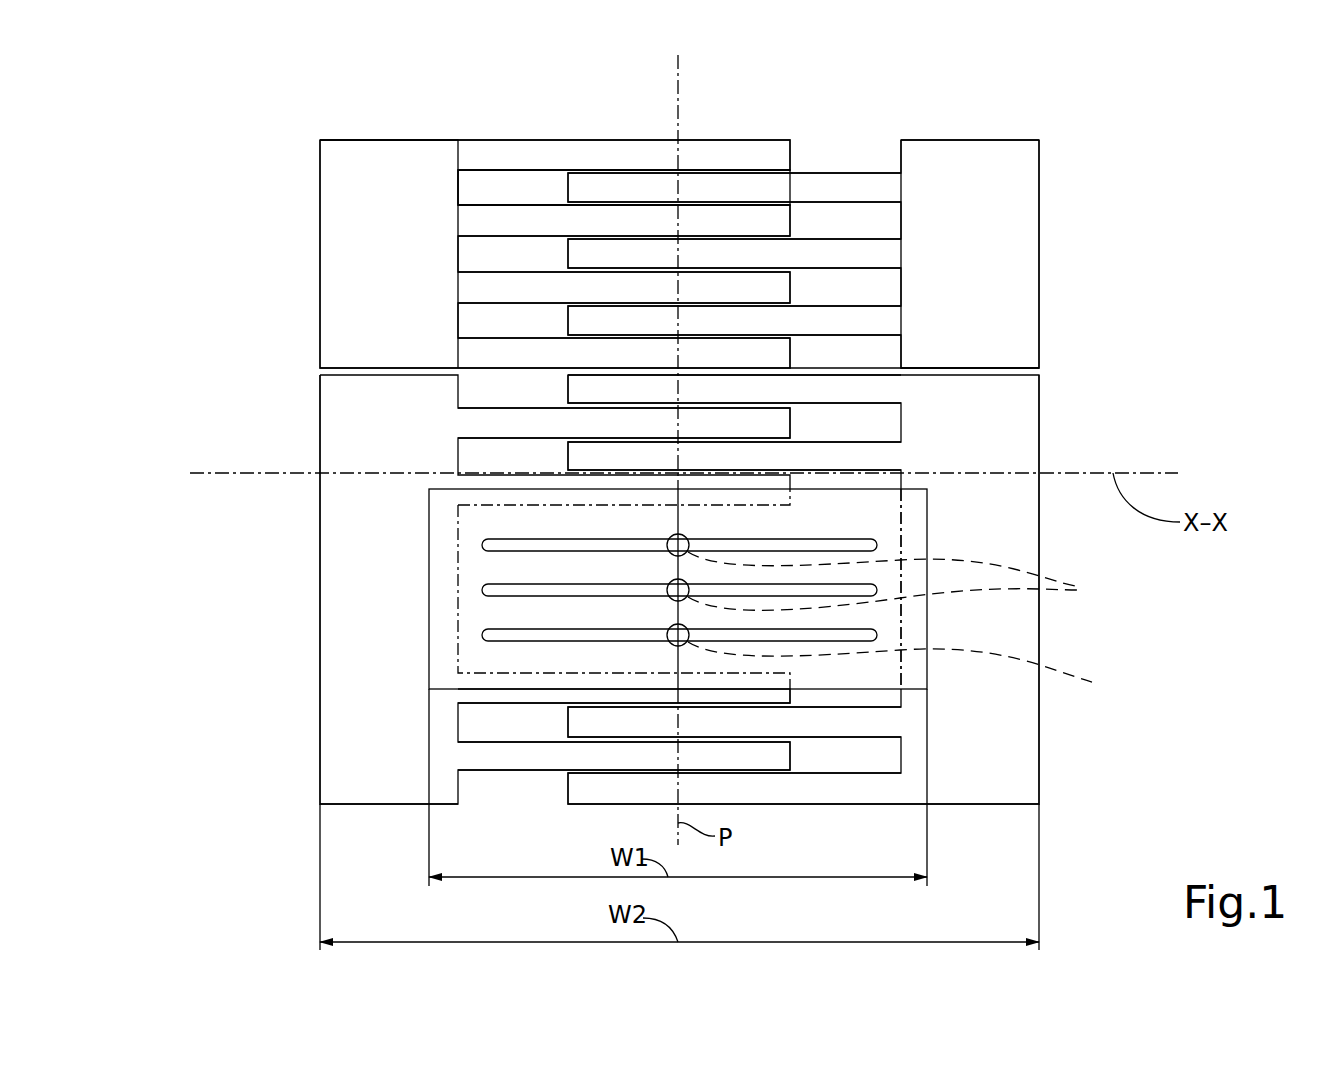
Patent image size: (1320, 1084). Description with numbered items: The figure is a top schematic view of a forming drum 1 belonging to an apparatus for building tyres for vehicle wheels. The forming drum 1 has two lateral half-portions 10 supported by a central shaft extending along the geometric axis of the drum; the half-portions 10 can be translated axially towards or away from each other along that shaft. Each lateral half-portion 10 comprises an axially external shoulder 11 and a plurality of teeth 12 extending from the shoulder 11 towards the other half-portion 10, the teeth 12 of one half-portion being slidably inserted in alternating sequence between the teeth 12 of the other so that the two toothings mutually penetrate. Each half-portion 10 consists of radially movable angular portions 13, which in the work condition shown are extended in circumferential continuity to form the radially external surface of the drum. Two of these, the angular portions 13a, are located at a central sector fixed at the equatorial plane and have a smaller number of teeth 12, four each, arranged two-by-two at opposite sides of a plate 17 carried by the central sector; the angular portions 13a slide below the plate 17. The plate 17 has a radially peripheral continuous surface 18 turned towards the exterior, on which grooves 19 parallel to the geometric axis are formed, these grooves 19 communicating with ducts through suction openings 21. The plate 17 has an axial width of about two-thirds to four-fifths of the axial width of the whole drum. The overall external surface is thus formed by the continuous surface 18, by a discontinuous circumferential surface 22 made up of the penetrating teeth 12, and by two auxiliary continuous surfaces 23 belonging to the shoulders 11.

The forming drum 1 is at (252, 831).
The lateral half-portion 10 is at (318, 325).
The axially external shoulder 11 is at (388, 138).
The teeth 12 is at (777, 293).
The angular portion 13 is at (318, 218).
The angular portion 13a is at (318, 522).
The plate 17 is at (428, 652).
The radially peripheral continuous surface 18 is at (860, 670).
The grooves 19 is at (492, 636).
The suction openings 21 is at (896, 616).
The discontinuous circumferential surface 22 is at (540, 192).
The auxiliary continuous surfaces 23 is at (360, 186).